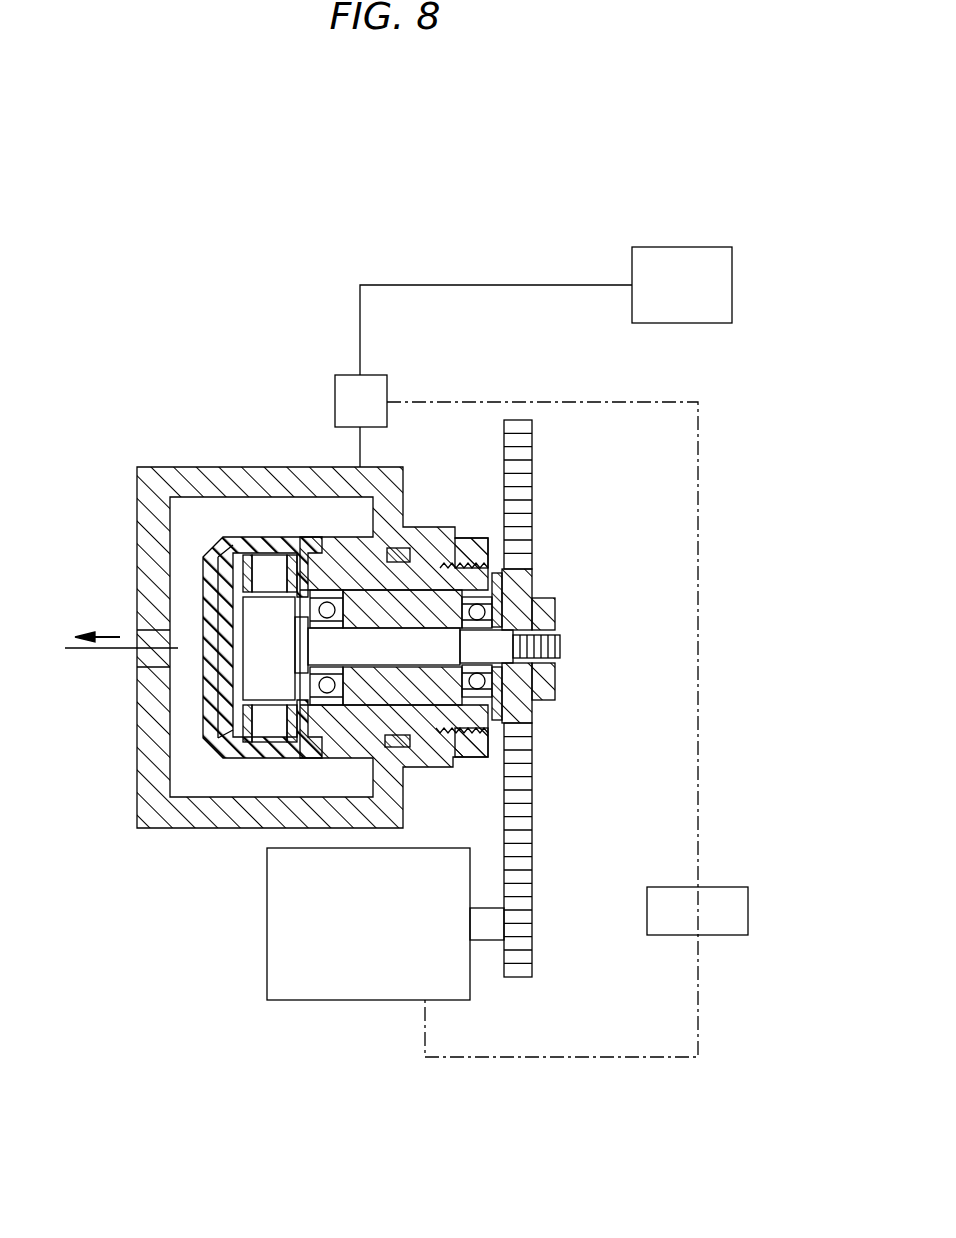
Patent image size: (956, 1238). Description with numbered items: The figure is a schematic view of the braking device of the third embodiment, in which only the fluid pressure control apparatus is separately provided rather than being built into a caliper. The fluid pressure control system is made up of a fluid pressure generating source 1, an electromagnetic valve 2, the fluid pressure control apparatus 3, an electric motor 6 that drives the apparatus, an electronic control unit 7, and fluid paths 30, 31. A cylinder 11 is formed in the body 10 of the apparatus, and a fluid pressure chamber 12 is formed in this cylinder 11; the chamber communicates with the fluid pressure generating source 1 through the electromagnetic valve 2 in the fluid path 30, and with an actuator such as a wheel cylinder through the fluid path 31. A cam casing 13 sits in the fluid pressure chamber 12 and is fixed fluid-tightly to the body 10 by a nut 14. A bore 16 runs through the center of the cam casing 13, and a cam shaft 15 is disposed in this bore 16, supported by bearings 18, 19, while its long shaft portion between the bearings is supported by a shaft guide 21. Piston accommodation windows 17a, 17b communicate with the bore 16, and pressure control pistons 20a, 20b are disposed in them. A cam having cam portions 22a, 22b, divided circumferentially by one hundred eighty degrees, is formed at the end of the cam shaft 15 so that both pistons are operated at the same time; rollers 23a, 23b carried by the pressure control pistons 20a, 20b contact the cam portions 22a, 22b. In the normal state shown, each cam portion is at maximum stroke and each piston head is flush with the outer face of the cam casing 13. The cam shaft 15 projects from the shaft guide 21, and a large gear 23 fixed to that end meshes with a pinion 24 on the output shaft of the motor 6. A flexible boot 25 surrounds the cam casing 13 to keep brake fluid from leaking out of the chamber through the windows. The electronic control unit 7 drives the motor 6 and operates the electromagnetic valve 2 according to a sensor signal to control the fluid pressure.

The fluid pressure generating source 1 is at (668, 247).
The electromagnetic valve 2 is at (387, 387).
The fluid pressure control apparatus 3 is at (278, 392).
The electric motor 6 is at (318, 1000).
The electronic control unit (ECU) 7 is at (713, 935).
The body 10 is at (283, 483).
The cylinder 11 is at (190, 505).
The fluid pressure chamber 12 is at (317, 517).
The cam casing 13 is at (230, 700).
The nut 14 is at (470, 548).
The cam shaft 15 is at (500, 632).
The bore 16 is at (415, 655).
The piston accommodation window 17a is at (335, 600).
The piston accommodation window 17b is at (327, 690).
The bearing 18 is at (310, 737).
The bearing 19 is at (550, 687).
The pressure control piston 20a is at (270, 572).
The pressure control piston 20b is at (272, 742).
The shaft guide 21 is at (490, 563).
The cam portion 22a is at (220, 690).
The cam portion 22b is at (225, 641).
The large gear 23 is at (517, 815).
The roller 23a is at (248, 555).
The roller 23b is at (247, 742).
The pinion 24 is at (515, 942).
The flexible boot 25 is at (210, 625).
The fluid path 30 is at (497, 285).
The fluid path 31 is at (80, 648).